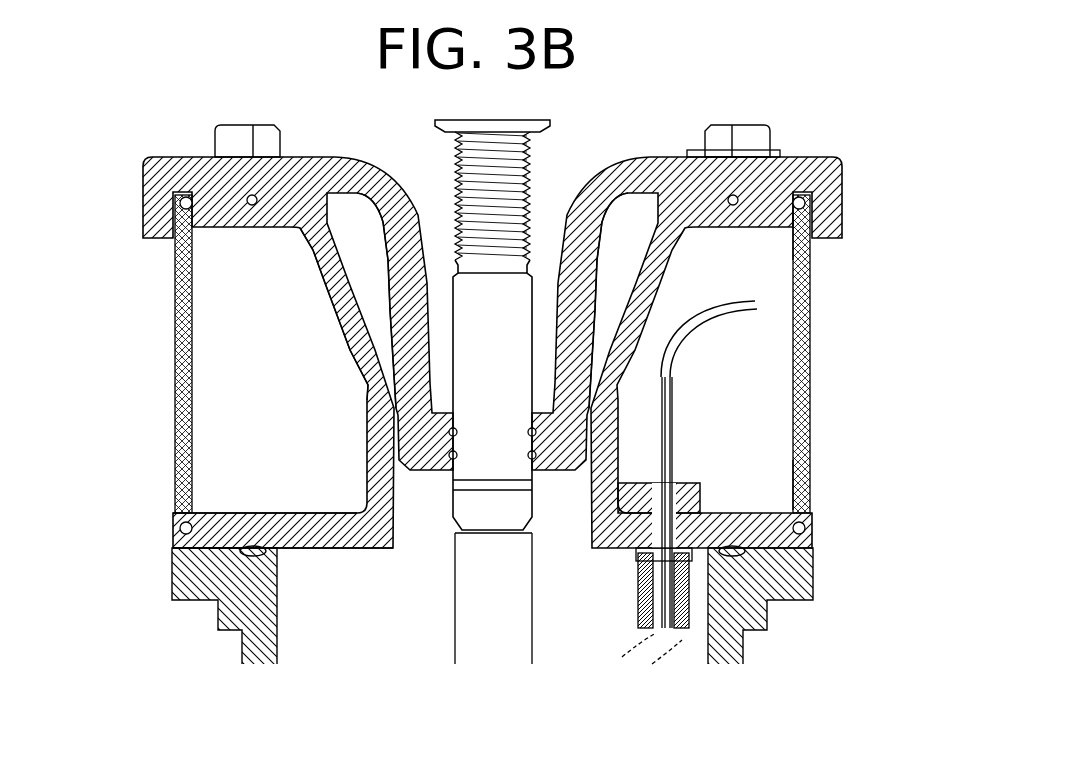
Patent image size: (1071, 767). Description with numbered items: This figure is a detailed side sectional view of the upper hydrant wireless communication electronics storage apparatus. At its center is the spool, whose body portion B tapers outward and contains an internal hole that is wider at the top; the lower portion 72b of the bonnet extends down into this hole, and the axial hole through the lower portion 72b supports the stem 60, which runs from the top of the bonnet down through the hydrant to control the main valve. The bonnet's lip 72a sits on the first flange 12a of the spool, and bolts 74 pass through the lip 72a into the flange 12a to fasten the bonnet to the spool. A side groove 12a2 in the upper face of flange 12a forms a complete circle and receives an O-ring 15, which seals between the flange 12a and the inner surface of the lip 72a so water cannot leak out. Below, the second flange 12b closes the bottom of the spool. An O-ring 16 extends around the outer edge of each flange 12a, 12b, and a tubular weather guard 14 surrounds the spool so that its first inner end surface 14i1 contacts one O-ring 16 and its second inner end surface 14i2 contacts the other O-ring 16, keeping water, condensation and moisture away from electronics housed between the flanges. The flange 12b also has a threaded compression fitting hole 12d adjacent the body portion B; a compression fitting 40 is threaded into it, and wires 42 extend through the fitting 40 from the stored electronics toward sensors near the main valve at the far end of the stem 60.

The first flange 12a is at (767, 202).
The side groove 12a2 is at (245, 193).
The second flange 12b is at (227, 540).
The compression fitting hole 12d is at (657, 503).
The weather guard 14 is at (178, 207).
The first inner end surface 14i1 is at (793, 222).
The second inner end surface 14i2 is at (787, 487).
The O-ring 15 is at (263, 197).
The O-ring 16 is at (172, 202).
The compression fitting 40 is at (640, 553).
The wires 42 is at (650, 487).
The stem 60 is at (525, 623).
The lip 72a is at (797, 167).
The lower portion 72b is at (385, 279).
The bolts 74 is at (233, 138).
The body portion B is at (350, 357).